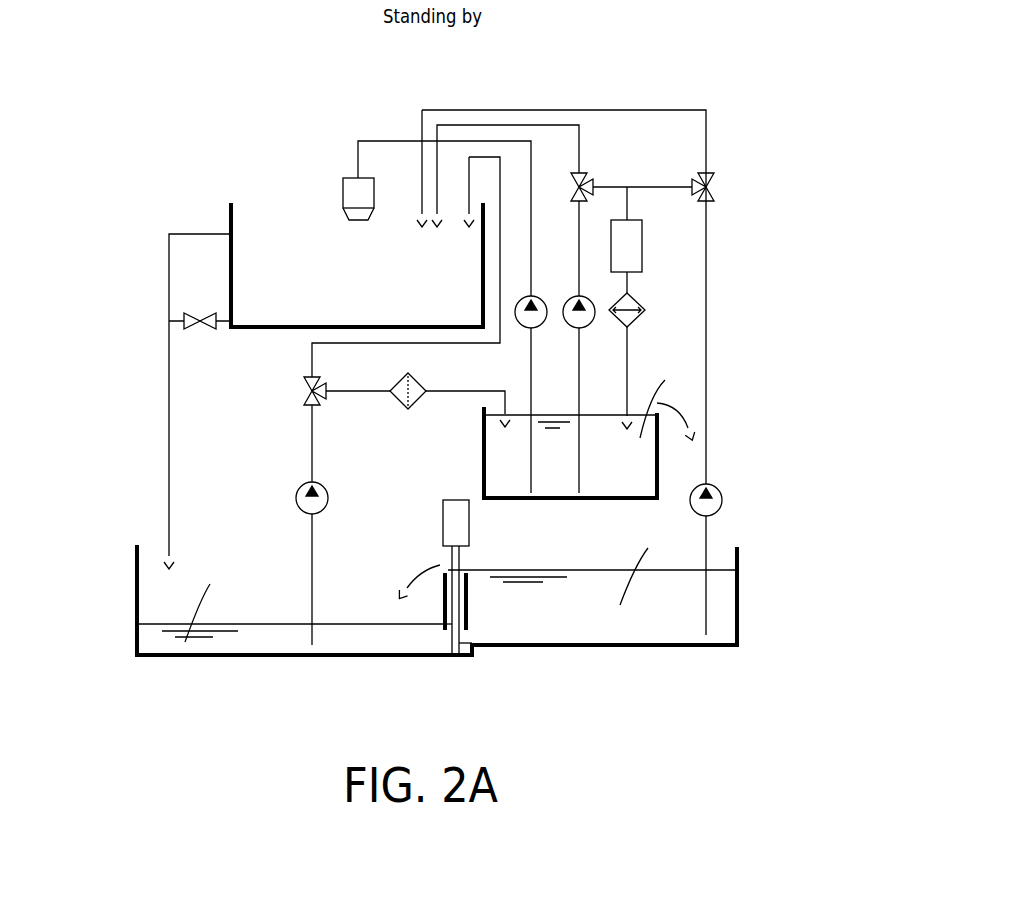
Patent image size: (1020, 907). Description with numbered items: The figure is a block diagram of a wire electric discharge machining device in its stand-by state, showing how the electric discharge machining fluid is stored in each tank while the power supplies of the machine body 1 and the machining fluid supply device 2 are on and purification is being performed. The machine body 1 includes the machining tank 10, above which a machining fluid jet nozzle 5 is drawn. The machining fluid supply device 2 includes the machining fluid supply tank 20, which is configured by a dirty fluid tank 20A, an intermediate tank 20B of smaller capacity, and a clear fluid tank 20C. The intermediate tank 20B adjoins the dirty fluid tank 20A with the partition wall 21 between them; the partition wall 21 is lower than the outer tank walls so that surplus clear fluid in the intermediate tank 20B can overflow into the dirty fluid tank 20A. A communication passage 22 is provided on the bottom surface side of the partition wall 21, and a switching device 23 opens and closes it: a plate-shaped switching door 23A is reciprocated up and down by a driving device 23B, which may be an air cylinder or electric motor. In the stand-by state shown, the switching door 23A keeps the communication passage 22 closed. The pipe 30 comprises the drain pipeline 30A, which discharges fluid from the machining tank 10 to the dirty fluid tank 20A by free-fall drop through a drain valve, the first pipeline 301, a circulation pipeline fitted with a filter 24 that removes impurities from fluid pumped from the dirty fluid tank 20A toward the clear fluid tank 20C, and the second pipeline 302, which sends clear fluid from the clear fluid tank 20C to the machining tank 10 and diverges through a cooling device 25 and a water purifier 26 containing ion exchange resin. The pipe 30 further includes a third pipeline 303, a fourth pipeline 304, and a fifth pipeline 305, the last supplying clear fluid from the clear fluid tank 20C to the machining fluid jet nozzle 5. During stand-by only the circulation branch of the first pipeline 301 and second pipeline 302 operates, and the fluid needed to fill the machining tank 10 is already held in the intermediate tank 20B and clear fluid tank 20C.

The machine body 1 is at (254, 154).
The machining fluid supply device 2 is at (747, 366).
The machining fluid jet nozzle 5 is at (342, 200).
The machining tank 10 is at (230, 213).
The machining fluid supply tank 20 is at (150, 510).
The dirty fluid tank 20A is at (130, 595).
The intermediate tank 20B is at (740, 592).
The clear fluid tank 20C is at (482, 470).
The partition wall 21 is at (441, 610).
The communication passage 22 is at (470, 640).
The switching device 23 is at (431, 543).
The switching door 23A is at (462, 605).
The driving device 23B is at (436, 515).
The filter 24 is at (424, 385).
The cooling device 25 is at (638, 305).
The water purifier 26 is at (640, 248).
The pipe 30 is at (710, 90).
The drain pipeline 30A is at (165, 400).
The first pipeline 301 is at (306, 565).
The second pipeline 302 is at (585, 160).
The third pipeline 303 is at (600, 110).
The fourth pipeline 304 is at (300, 362).
The fifth pipeline 305 is at (386, 140).